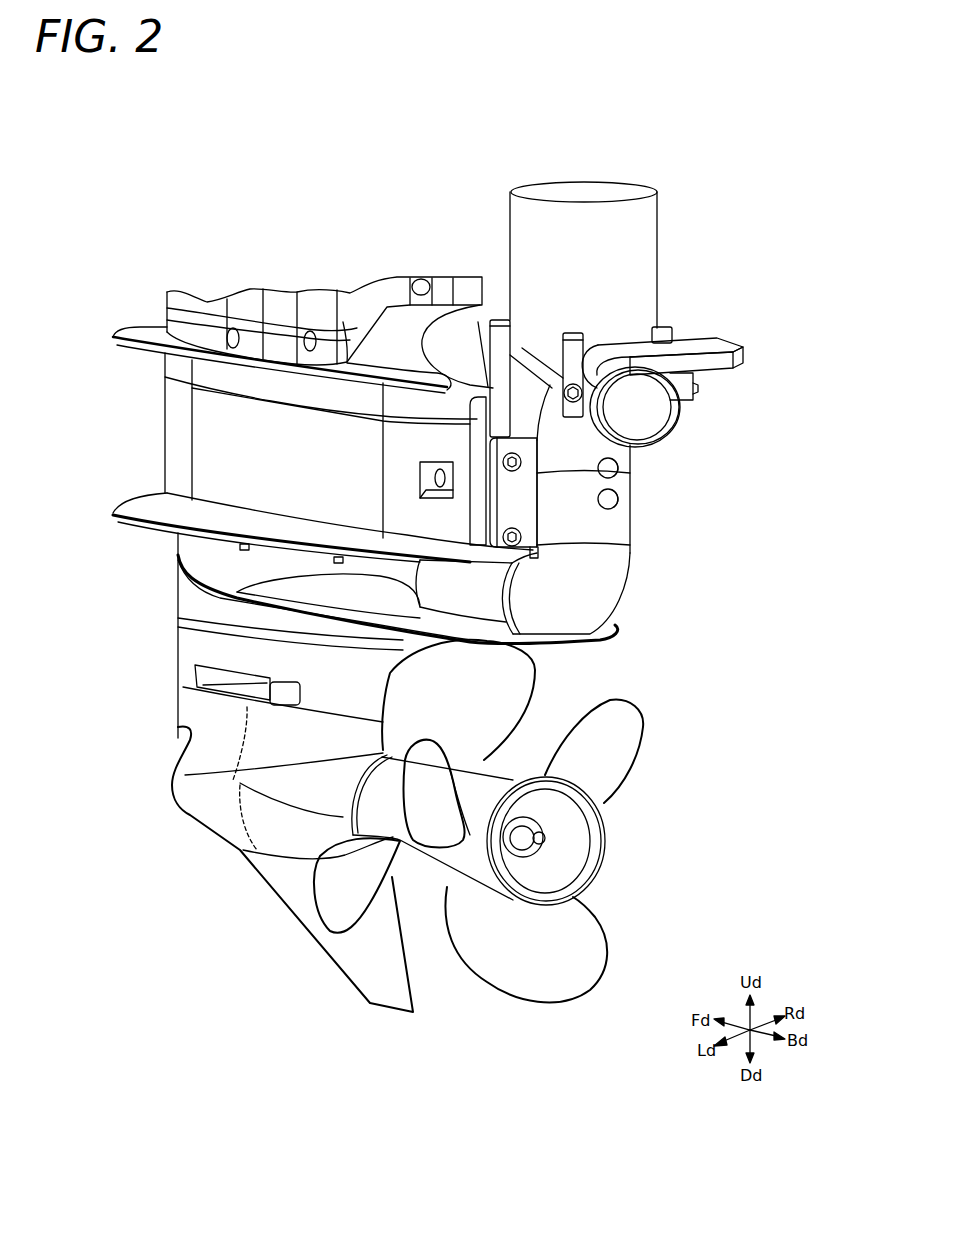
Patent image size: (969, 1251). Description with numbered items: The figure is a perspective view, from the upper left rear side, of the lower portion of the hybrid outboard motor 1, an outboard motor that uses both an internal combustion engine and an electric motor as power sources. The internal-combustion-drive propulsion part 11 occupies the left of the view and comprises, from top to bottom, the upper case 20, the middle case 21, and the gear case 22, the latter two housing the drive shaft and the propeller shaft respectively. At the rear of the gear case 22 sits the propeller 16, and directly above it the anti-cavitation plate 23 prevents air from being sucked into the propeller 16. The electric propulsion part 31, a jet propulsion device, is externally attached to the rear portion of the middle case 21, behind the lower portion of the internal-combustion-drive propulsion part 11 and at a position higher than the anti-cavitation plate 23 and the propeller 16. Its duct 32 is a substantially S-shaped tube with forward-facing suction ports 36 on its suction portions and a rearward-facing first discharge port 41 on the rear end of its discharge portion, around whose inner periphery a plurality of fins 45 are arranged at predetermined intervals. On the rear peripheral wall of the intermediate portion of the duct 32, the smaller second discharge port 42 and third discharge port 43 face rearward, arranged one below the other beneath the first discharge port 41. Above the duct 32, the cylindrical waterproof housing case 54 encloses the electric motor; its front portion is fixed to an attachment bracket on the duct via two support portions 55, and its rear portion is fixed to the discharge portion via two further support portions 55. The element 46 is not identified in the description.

The hybrid outboard motor 1 is at (375, 198).
The internal-combustion-drive propulsion part 11 is at (158, 262).
The propeller 16 is at (520, 682).
The upper case 20 is at (170, 306).
The middle case 21 is at (163, 433).
The gear case 22 is at (178, 711).
The anti-cavitation plate 23 is at (620, 626).
The electric propulsion part 31 is at (748, 466).
The duct 32 is at (622, 574).
The suction port 36 is at (178, 588).
The first discharge port 41 is at (670, 420).
The second discharge port 42 is at (615, 479).
The third discharge port 43 is at (617, 504).
The fins 45 is at (683, 402).
The support arm 46 is at (718, 349).
The housing case 54 is at (635, 190).
The support portions 55 is at (565, 368).